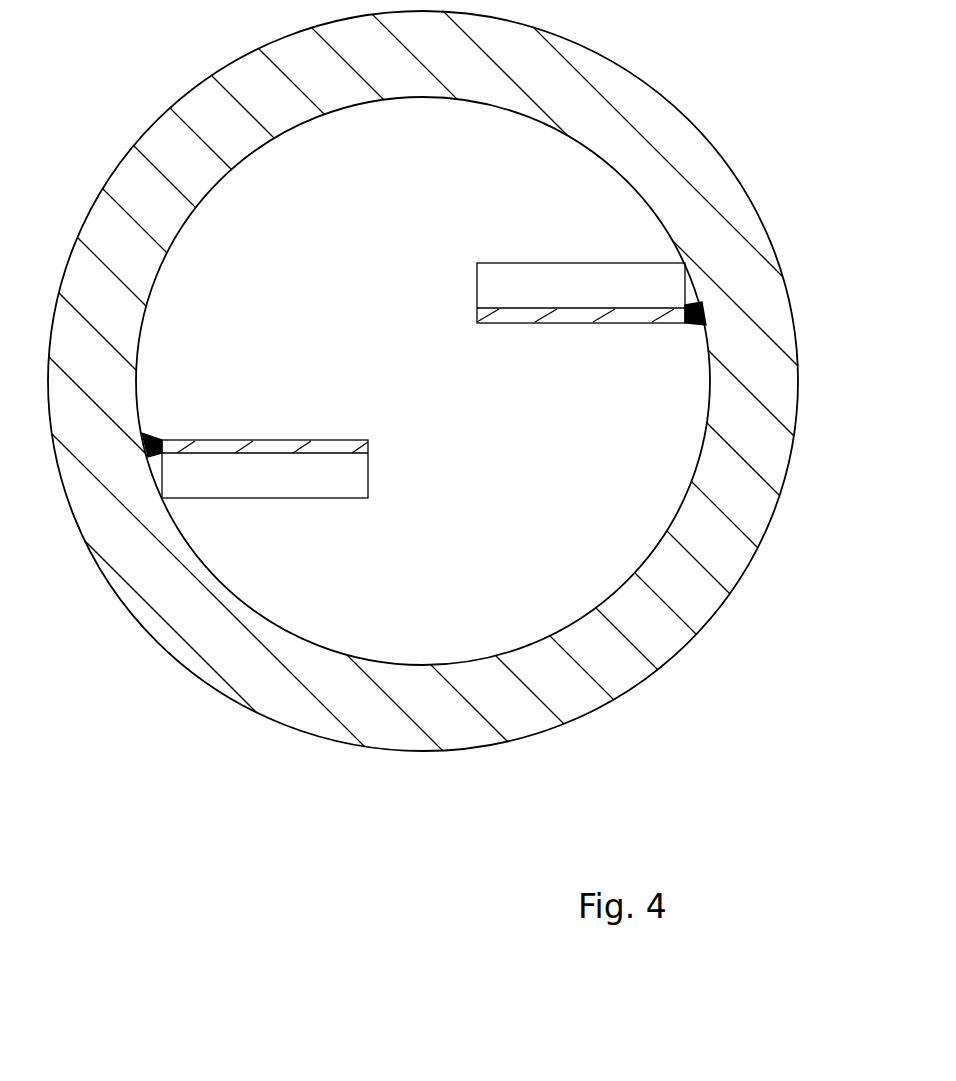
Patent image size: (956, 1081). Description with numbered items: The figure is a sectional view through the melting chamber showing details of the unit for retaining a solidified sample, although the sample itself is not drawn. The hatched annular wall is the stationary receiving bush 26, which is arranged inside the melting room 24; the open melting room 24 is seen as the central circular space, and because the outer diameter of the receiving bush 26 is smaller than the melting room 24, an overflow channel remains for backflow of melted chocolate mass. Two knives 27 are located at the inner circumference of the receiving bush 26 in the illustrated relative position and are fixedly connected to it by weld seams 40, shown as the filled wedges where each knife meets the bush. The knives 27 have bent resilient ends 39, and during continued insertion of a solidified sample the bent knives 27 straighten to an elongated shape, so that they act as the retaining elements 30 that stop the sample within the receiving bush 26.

The melting room 24 is at (625, 407).
The receiving bush 26 is at (742, 498).
The knives 27 is at (472, 253).
The retaining elements 30 is at (580, 315).
The bent resilient ends 39 is at (547, 283).
The weld seams 40 is at (702, 303).